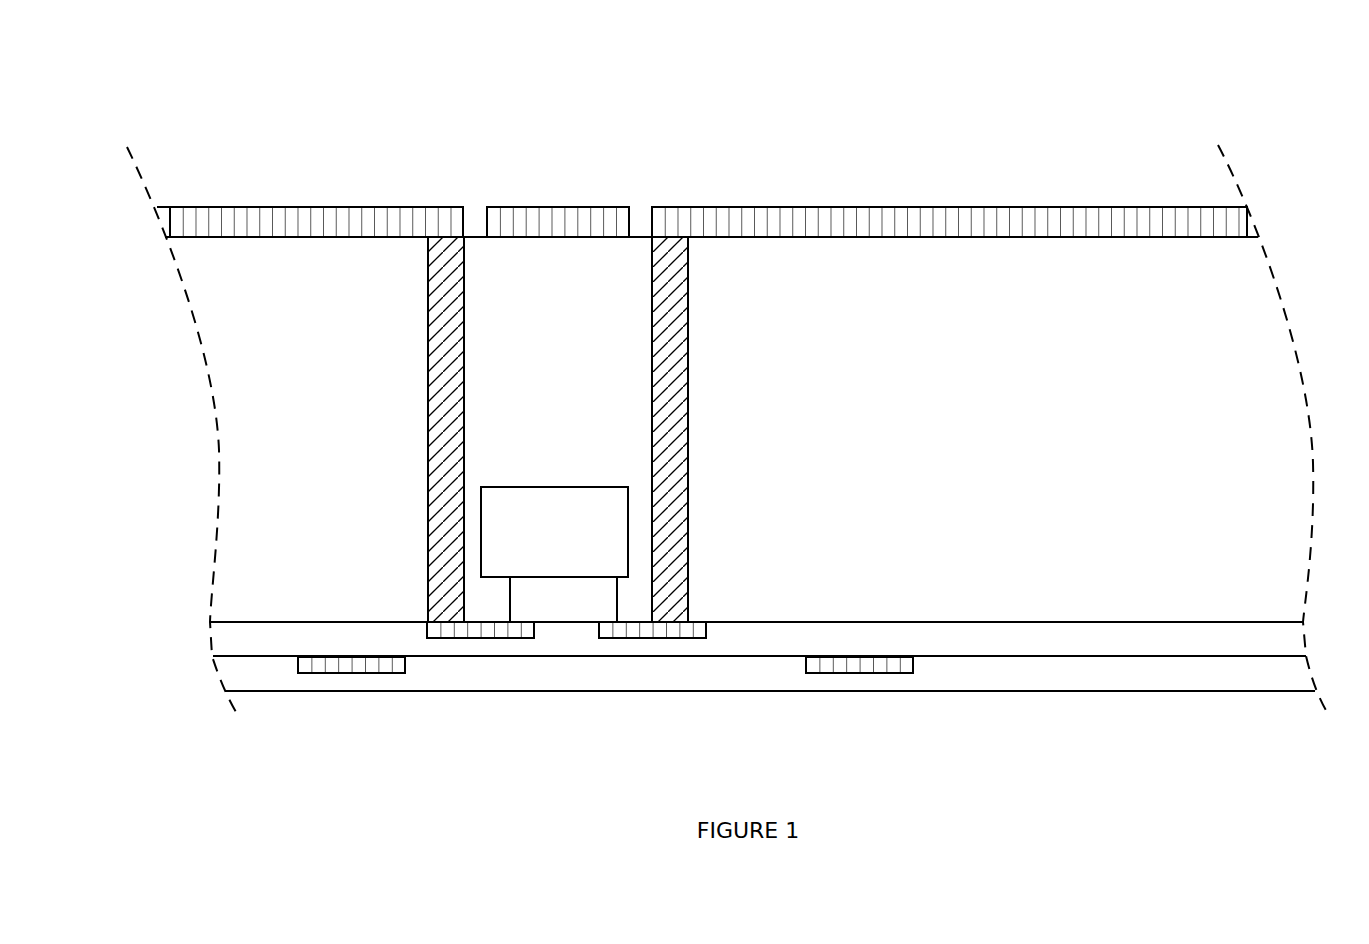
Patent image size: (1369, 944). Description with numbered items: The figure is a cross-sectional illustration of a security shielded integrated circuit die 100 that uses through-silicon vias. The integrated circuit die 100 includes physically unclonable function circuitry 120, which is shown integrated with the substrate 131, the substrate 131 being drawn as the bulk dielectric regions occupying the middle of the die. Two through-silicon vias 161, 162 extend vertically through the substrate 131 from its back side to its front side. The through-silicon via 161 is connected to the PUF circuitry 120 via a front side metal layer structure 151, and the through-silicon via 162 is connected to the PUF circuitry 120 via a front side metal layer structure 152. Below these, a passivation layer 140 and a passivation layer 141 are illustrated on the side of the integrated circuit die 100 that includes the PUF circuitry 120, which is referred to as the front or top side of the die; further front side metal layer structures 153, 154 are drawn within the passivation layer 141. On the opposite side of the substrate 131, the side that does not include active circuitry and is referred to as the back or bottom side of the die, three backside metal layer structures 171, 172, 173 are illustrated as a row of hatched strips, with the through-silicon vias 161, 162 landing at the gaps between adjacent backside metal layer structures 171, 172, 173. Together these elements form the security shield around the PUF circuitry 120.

The integrated circuit die 100 is at (1272, 82).
The physically unclonable function circuitry 120 is at (534, 559).
The substrate 131 is at (255, 416).
The passivation layer 140 is at (240, 643).
The passivation layer 141 is at (277, 683).
The front side metal layer structure 151 is at (475, 633).
The front side metal layer structure 152 is at (692, 633).
The front side metal layer structure 153 is at (343, 675).
The front side metal layer structure 154 is at (877, 663).
The through-silicon via 161 is at (435, 375).
The through-silicon via 162 is at (682, 352).
The backside metal layer structure 171 is at (298, 217).
The backside metal layer structure 172 is at (515, 225).
The backside metal layer structure 173 is at (952, 218).